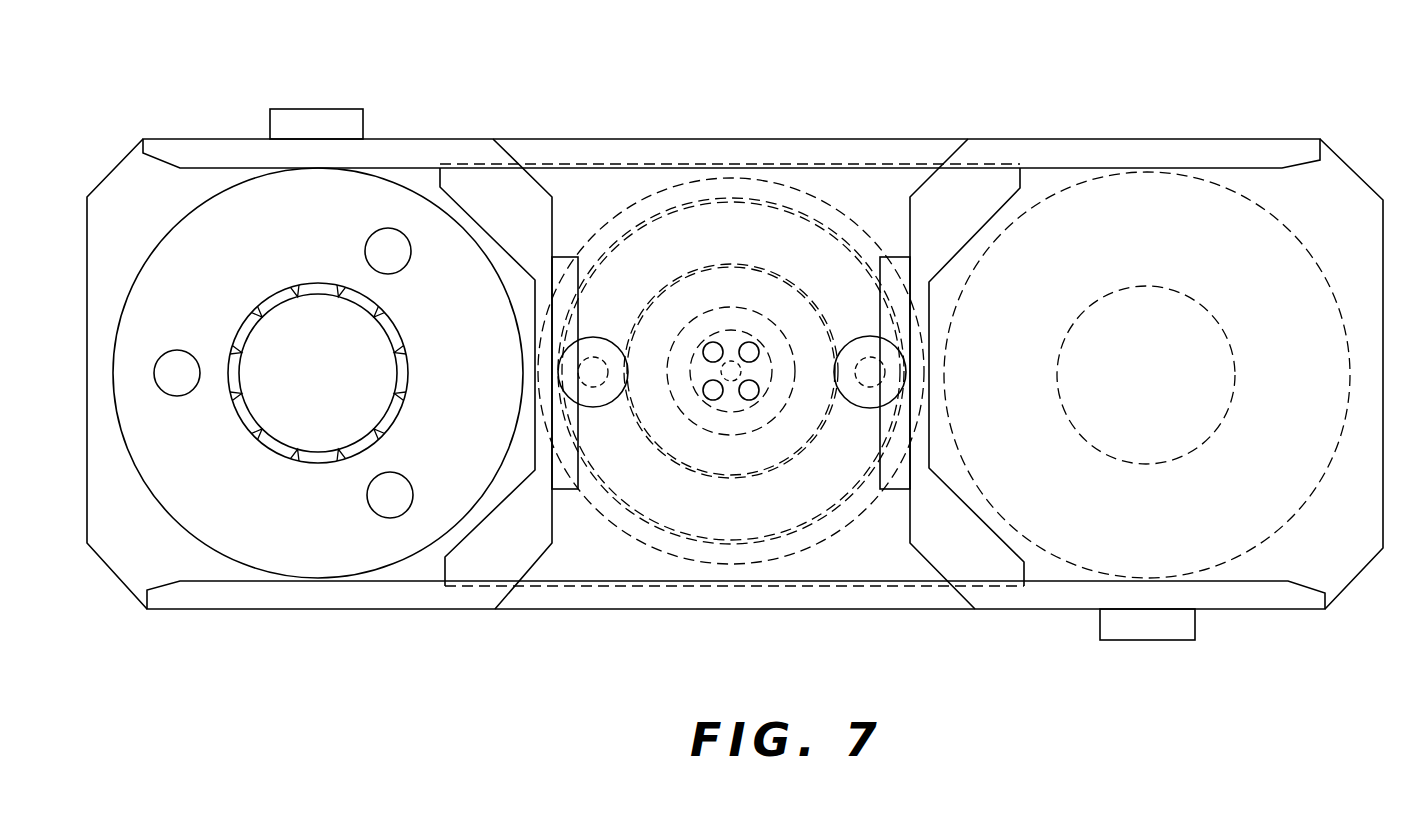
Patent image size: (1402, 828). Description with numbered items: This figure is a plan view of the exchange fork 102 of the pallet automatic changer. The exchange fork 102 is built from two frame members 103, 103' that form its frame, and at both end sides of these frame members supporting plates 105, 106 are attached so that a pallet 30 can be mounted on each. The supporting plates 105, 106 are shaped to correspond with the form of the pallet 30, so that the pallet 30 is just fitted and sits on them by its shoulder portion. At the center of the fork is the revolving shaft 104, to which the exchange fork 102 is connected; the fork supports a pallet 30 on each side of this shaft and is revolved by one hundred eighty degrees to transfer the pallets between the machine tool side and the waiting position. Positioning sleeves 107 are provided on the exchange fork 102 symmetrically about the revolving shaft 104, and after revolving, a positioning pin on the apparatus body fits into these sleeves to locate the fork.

The pallet 30 is at (313, 552).
The exchange fork 102 is at (942, 97).
The frame member 103 is at (731, 113).
The frame member 103' is at (736, 629).
The revolving shaft 104 is at (757, 432).
The supporting plate 105 is at (110, 262).
The supporting plate 106 is at (1352, 263).
The positioning sleeve 107 is at (602, 338).